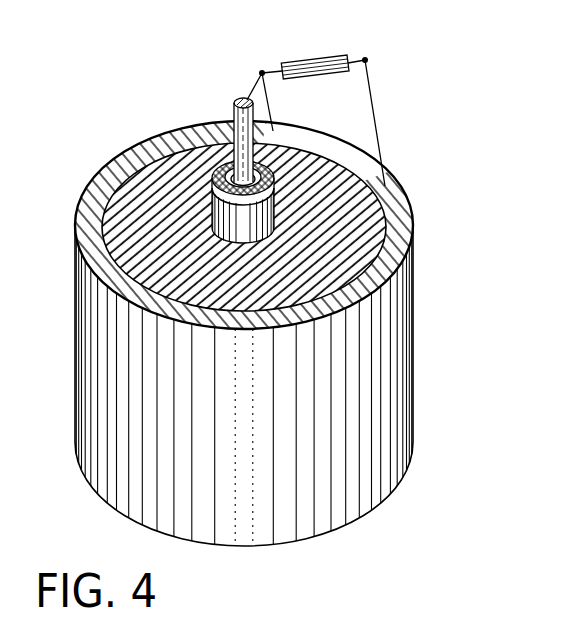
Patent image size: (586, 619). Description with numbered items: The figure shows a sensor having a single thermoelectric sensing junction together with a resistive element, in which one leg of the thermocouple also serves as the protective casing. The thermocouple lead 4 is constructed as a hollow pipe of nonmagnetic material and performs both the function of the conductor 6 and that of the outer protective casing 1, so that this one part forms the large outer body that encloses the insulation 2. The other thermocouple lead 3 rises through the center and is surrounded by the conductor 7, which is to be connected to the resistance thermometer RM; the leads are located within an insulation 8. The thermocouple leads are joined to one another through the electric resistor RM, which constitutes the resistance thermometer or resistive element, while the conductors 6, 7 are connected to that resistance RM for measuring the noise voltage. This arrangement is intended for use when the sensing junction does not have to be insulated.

The outer protective casing 1 is at (245, 321).
The lead 4 is at (245, 321).
The conductor 6 is at (388, 186).
The insulation 2 is at (262, 263).
The lead 3 is at (238, 117).
The conductor 7 is at (231, 189).
The insulation 8 is at (213, 208).
The electric resistor RM is at (297, 64).